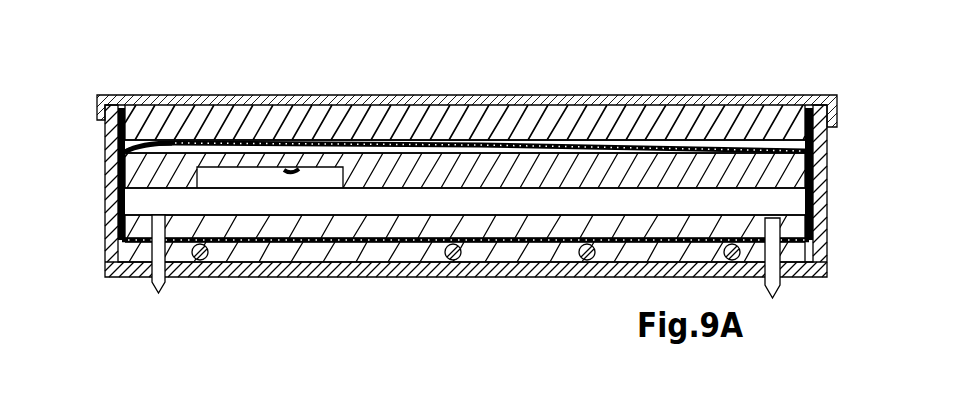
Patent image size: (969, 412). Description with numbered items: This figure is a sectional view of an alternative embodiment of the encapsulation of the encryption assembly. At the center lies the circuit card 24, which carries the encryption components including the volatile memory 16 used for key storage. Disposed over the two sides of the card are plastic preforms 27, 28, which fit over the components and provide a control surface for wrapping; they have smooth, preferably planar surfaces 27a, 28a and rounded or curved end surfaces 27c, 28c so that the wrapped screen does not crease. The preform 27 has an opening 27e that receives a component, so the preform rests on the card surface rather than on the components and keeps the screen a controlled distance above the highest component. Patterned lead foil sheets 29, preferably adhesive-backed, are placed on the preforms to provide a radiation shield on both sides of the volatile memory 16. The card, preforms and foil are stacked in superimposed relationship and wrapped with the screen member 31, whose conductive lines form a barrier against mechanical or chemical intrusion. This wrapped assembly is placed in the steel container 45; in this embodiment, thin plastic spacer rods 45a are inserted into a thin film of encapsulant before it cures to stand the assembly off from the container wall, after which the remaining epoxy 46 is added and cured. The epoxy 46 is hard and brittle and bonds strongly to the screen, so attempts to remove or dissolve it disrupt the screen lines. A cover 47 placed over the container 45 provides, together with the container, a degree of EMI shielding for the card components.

The volatile memory 16 is at (310, 180).
The circuit card 24 is at (292, 203).
The plastic preform 27 is at (383, 167).
The planar surface of preform 27a is at (410, 147).
The rounded end surface of preform 27c is at (125, 152).
The opening in preform 27e is at (293, 167).
The plastic preform 28 is at (227, 227).
The planar surface of preform 28a is at (447, 263).
The rounded end surface of preform 28c is at (107, 262).
The patterned lead foil sheet 29 is at (262, 146).
The screen member 31 is at (153, 141).
The steel container 45 is at (820, 167).
The plastic spacer rods 45a is at (590, 267).
The epoxy 46 is at (550, 110).
The cover 47 is at (632, 100).